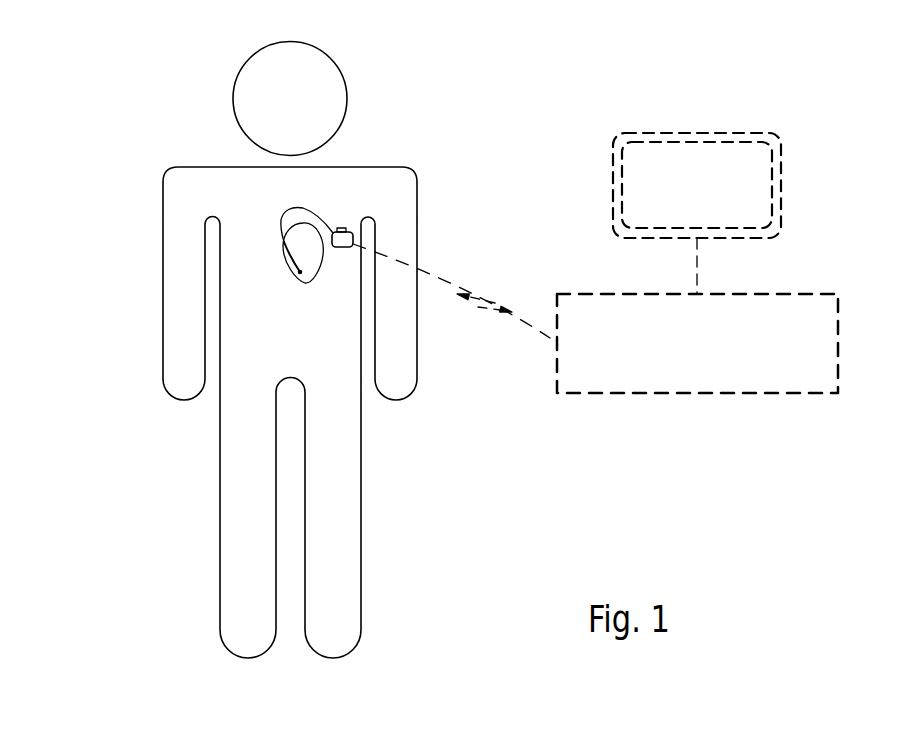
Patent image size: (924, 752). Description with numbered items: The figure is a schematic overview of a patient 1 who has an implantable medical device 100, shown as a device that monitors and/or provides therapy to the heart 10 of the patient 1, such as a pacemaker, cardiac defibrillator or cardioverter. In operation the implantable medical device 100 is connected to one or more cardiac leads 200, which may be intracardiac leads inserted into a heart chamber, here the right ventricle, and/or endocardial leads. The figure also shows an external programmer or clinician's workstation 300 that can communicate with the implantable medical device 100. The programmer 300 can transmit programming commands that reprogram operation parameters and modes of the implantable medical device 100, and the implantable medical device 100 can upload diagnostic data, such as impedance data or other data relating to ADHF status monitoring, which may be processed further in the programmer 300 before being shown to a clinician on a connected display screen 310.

The patient 1 is at (165, 166).
The heart 10 is at (305, 283).
The implantable medical device 100 is at (343, 228).
The cardiac lead 200 is at (285, 249).
The programmer 300 is at (838, 345).
The display screen 310 is at (781, 182).